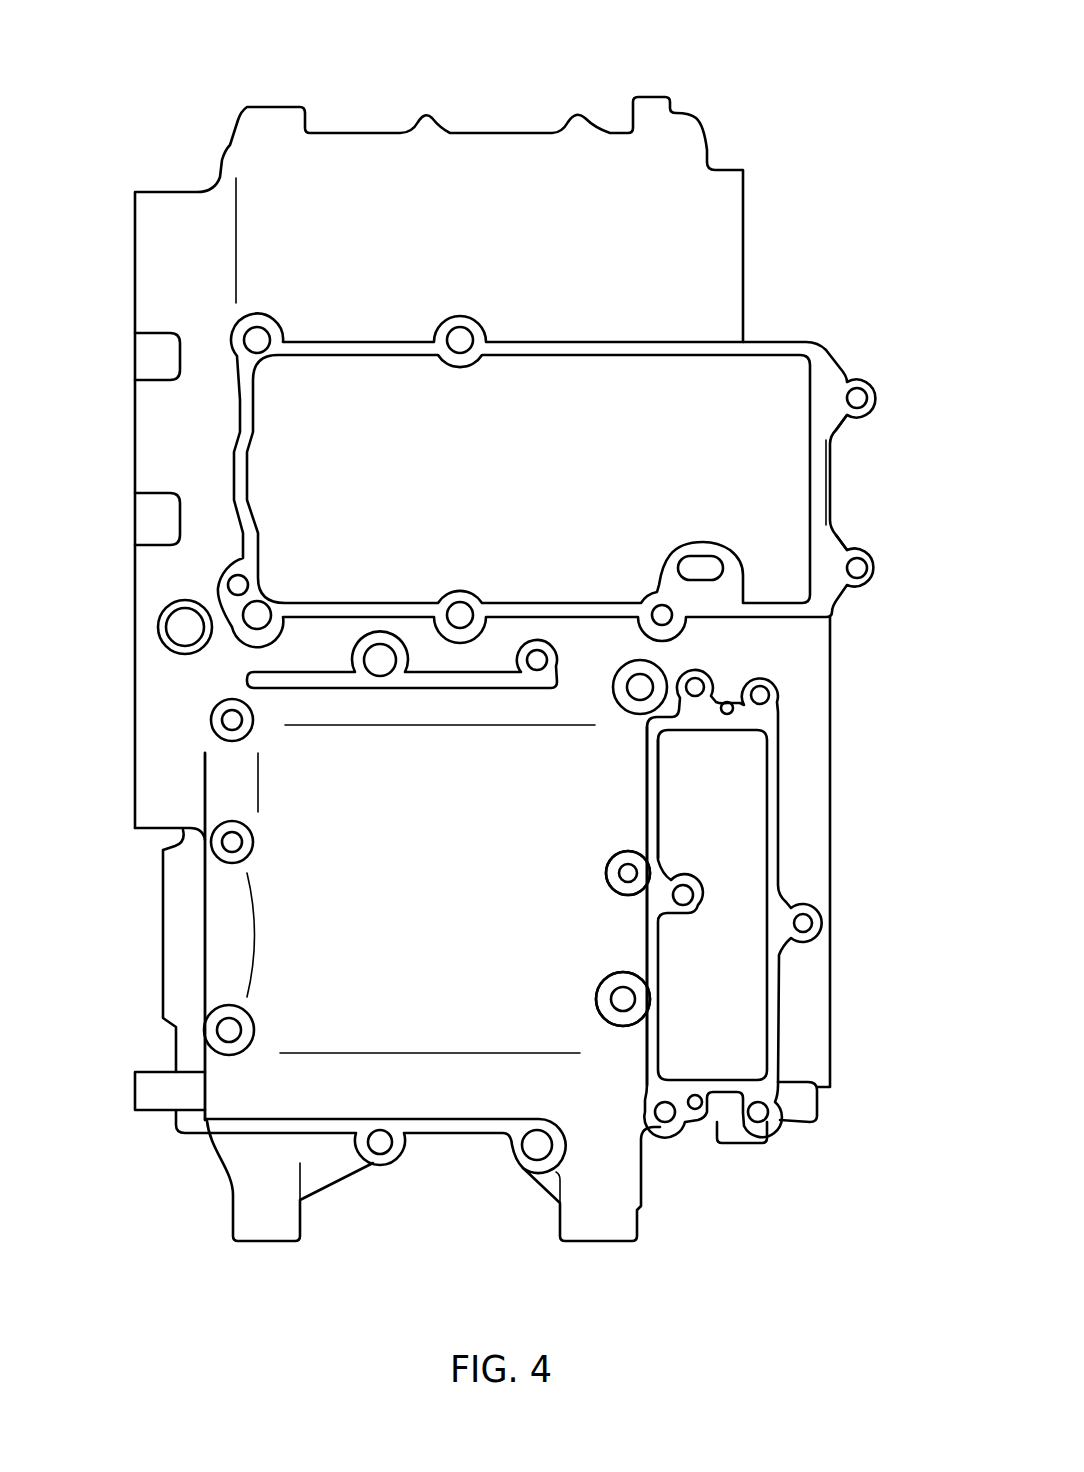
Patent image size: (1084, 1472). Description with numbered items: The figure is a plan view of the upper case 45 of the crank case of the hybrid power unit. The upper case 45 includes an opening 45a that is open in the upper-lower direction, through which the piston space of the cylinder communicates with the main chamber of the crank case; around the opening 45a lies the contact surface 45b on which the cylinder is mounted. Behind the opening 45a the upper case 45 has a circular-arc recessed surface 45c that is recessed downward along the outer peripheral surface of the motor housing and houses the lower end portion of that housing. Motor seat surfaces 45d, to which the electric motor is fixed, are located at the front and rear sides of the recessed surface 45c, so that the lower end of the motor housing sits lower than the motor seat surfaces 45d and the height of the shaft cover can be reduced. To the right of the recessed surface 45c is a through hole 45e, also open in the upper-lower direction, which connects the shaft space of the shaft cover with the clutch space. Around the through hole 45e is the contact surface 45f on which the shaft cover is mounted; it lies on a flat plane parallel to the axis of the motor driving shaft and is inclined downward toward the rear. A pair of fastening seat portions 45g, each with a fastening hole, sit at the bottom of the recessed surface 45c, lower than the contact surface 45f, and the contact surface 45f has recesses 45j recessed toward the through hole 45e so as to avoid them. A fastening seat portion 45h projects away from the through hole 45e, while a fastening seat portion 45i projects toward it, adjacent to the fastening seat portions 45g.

The upper case 45 is at (718, 128).
The opening 45a is at (765, 385).
The contact surface 45b is at (830, 548).
The recessed surface 45c is at (383, 932).
The motor seat surfaces 45d is at (398, 677).
The through hole 45e is at (738, 772).
The contact surface 45f is at (648, 778).
The fastening seat portions 45g is at (603, 988).
The fastening seat portion 45h is at (792, 905).
The fastening seat portion 45i is at (683, 913).
The recesses 45j is at (652, 865).